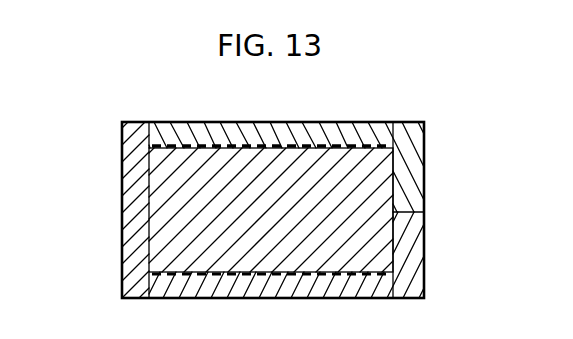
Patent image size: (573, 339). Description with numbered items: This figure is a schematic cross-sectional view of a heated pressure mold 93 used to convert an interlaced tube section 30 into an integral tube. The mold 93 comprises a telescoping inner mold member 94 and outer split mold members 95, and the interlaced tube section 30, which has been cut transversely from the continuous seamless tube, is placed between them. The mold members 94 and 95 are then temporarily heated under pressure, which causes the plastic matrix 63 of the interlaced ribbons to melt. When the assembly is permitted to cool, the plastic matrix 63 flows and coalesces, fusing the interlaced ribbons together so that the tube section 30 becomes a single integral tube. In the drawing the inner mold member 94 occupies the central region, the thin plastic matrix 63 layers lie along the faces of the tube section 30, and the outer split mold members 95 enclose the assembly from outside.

The heated pressure mold 93 is at (397, 115).
The telescoping inner mold member 94 is at (137, 221).
The plastic matrix 63 is at (271, 146).
The interlaced tube section 30 is at (168, 147).
The outer split mold members 95 is at (408, 183).